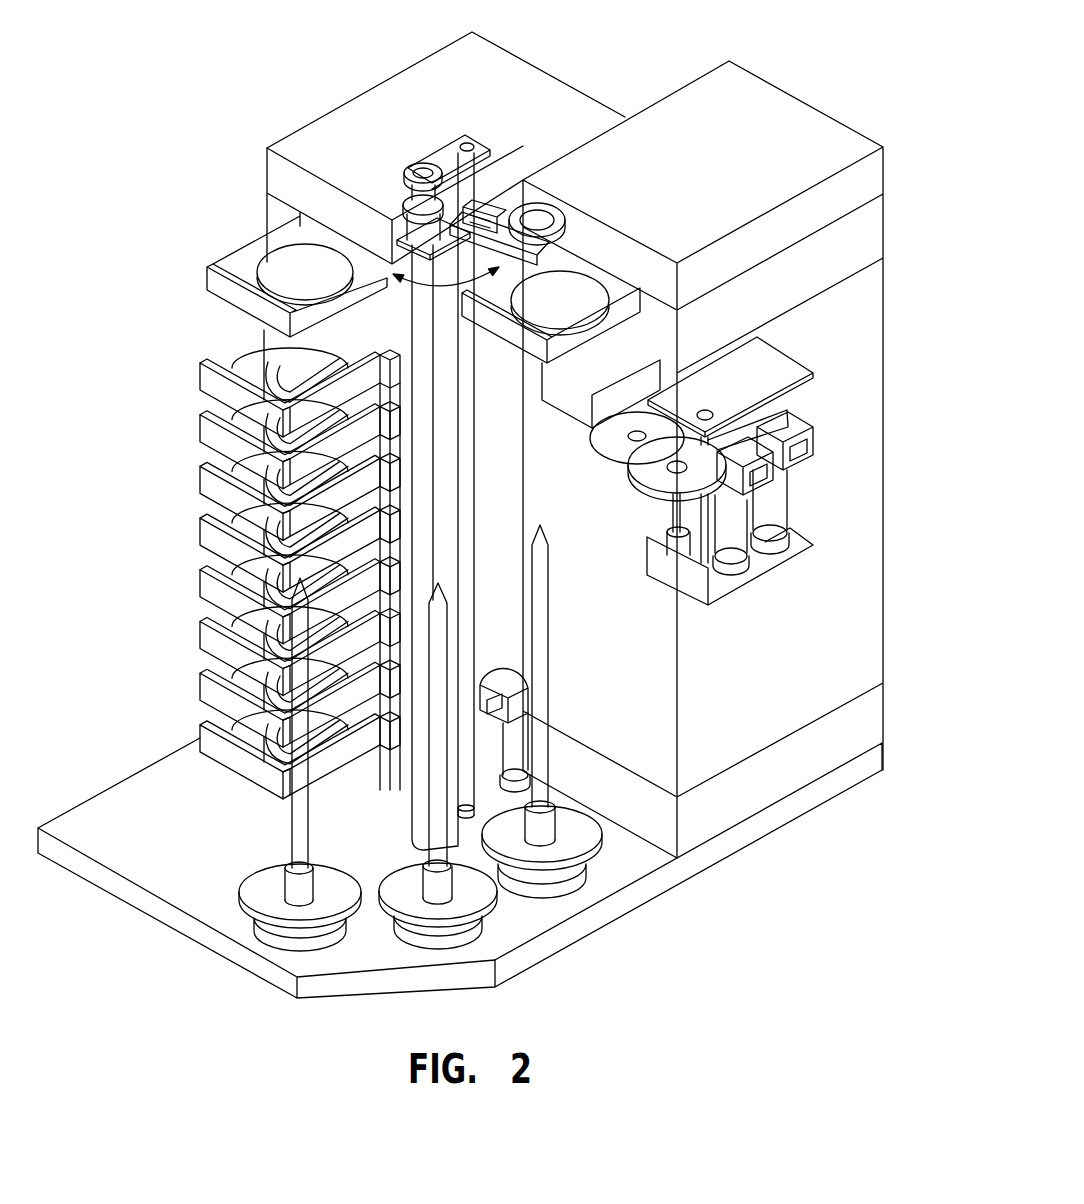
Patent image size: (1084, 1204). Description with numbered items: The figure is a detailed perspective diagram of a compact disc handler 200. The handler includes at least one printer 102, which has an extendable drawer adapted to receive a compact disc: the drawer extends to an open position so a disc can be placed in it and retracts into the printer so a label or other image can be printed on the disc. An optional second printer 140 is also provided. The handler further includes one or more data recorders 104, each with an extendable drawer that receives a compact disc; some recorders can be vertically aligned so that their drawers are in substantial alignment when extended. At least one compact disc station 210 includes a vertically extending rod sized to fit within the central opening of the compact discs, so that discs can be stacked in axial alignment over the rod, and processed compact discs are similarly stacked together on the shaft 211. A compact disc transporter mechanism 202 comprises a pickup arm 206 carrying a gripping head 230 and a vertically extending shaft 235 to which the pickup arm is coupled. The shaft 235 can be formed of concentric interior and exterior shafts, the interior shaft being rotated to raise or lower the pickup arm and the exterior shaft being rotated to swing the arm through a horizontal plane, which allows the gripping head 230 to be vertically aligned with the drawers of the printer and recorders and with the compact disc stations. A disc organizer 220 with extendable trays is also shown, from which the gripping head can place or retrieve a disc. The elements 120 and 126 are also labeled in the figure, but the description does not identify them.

The compact disc handler 200 is at (871, 86).
The compact disc transporter mechanism 202 is at (426, 112).
The printer 102 is at (387, 159).
The pickup arm 206 is at (480, 212).
The gripping head 230 is at (558, 218).
The second printer 140 is at (871, 179).
The wafer 120 is at (265, 262).
The wafer cassette 126 is at (252, 370).
The data recorder 104 is at (395, 424).
The vertically extending shaft 235 is at (430, 487).
The shaft 211 is at (438, 674).
The compact disc station 210 is at (548, 630).
The disc organizer 220 is at (842, 432).